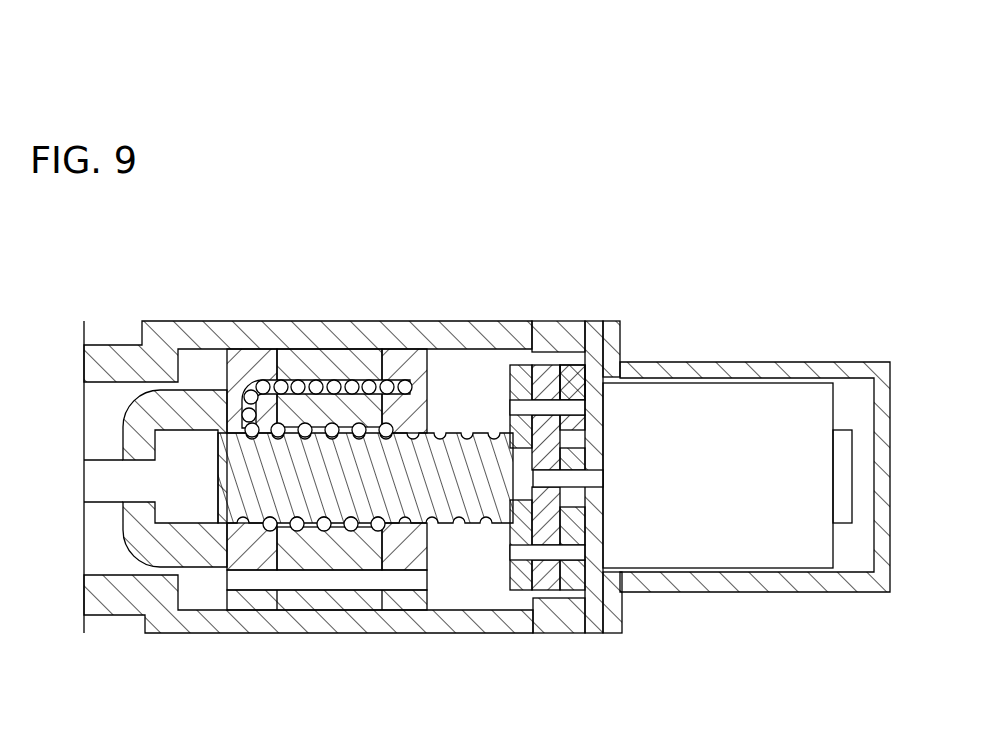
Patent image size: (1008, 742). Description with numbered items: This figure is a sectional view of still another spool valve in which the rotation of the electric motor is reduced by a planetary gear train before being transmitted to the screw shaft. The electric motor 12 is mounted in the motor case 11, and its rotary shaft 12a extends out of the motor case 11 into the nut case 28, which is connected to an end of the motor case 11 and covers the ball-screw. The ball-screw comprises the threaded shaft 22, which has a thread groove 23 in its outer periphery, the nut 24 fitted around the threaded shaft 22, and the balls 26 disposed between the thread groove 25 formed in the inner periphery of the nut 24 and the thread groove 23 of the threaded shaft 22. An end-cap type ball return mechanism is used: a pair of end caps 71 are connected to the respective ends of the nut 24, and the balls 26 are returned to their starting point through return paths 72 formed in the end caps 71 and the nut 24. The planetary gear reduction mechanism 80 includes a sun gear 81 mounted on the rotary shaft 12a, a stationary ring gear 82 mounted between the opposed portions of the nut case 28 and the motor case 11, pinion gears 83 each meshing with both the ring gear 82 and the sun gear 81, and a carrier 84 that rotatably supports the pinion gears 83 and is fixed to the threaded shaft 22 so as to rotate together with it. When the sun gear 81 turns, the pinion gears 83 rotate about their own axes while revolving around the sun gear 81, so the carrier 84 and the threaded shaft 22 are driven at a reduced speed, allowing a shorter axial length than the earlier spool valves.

The motor case 11 is at (828, 370).
The electric motor 12 is at (757, 392).
The rotary shaft 12a is at (578, 479).
The threaded shaft 22 is at (478, 527).
The thread groove 23 is at (270, 531).
The nut 24 is at (292, 349).
The thread groove 25 is at (318, 527).
The balls 26 is at (355, 531).
The nut case 28 is at (155, 324).
The end caps 71 is at (245, 349).
The return paths 72 is at (340, 378).
The planetary gear reduction mechanism 80 is at (589, 424).
The sun gear 81 is at (565, 452).
The stationary ring gear 82 is at (565, 330).
The pinion gears 83 is at (606, 368).
The carrier 84 is at (516, 362).